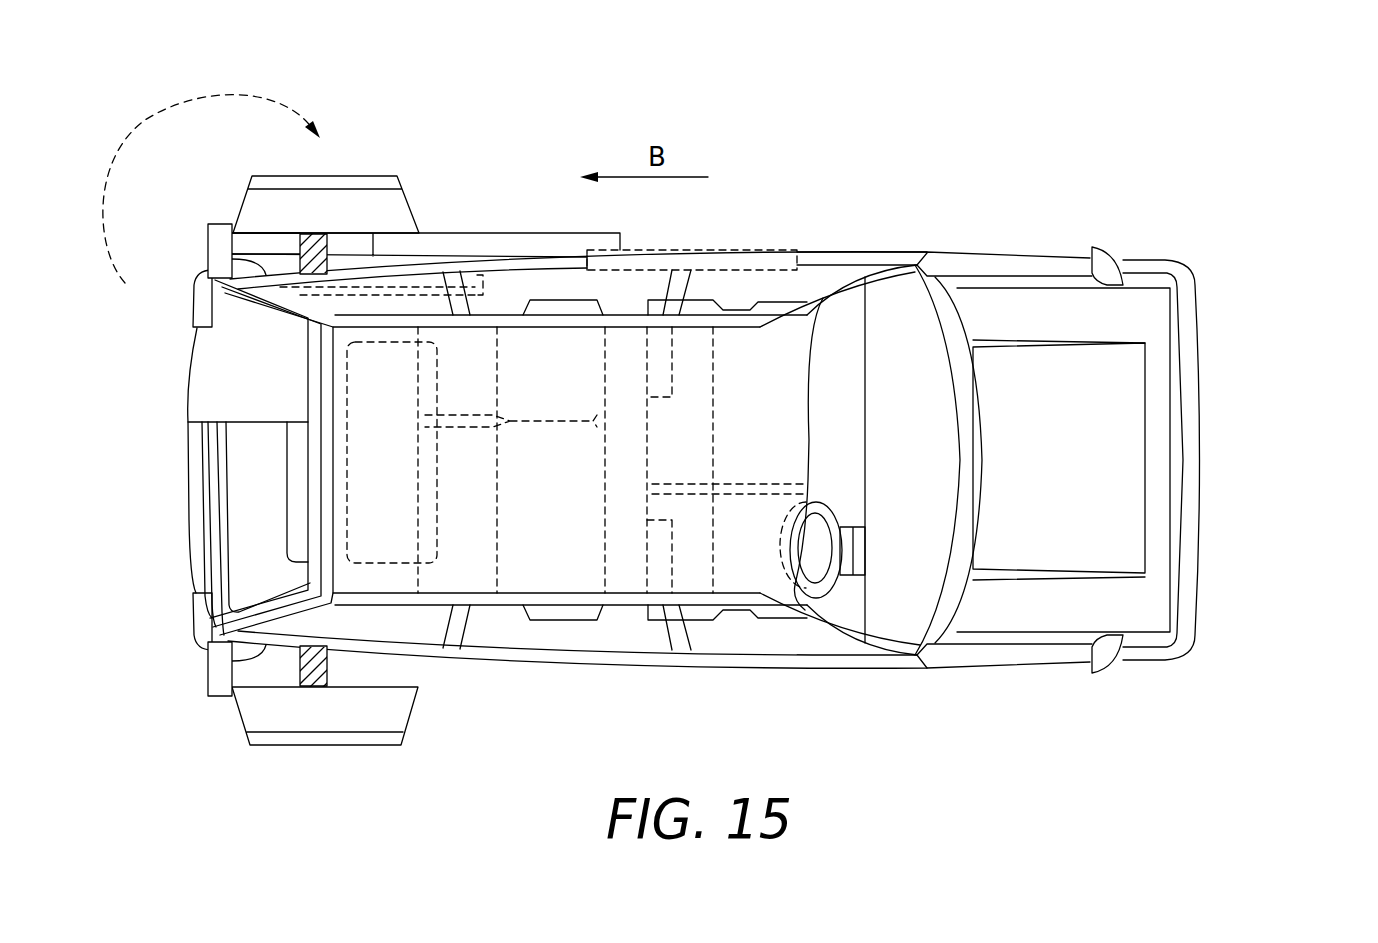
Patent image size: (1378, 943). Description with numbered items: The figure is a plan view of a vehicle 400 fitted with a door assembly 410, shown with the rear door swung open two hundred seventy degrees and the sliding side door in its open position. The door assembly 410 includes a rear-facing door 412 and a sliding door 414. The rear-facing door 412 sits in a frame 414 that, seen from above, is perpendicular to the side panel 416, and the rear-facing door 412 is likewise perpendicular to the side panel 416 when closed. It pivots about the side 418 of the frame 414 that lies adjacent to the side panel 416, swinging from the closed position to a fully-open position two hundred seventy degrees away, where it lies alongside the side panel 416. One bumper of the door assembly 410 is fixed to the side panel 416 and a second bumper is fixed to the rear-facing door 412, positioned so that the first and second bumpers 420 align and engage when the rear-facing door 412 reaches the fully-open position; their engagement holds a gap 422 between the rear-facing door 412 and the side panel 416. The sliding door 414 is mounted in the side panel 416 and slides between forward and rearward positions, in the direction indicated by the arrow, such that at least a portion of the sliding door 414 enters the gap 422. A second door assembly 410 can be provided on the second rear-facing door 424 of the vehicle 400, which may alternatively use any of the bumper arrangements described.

The vehicle 400 is at (1292, 112).
The door assembly 410 is at (160, 297).
The rear-facing door 412 is at (397, 208).
The sliding door 414 is at (502, 242).
The side panel 416 is at (347, 270).
The side of the frame 418 is at (208, 257).
The first and second bumpers 420 is at (313, 242).
The gap 422 is at (265, 242).
The second rear-facing door 424 is at (285, 718).